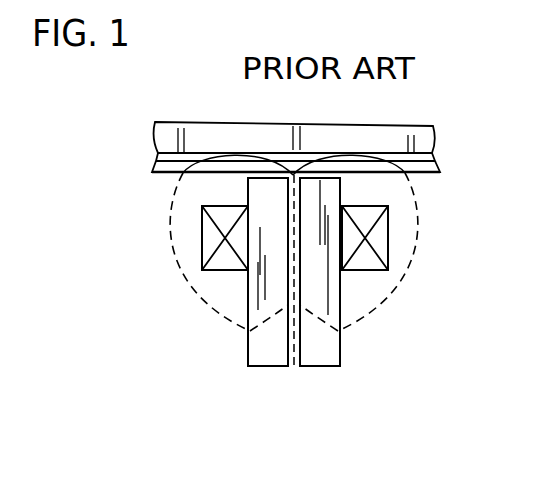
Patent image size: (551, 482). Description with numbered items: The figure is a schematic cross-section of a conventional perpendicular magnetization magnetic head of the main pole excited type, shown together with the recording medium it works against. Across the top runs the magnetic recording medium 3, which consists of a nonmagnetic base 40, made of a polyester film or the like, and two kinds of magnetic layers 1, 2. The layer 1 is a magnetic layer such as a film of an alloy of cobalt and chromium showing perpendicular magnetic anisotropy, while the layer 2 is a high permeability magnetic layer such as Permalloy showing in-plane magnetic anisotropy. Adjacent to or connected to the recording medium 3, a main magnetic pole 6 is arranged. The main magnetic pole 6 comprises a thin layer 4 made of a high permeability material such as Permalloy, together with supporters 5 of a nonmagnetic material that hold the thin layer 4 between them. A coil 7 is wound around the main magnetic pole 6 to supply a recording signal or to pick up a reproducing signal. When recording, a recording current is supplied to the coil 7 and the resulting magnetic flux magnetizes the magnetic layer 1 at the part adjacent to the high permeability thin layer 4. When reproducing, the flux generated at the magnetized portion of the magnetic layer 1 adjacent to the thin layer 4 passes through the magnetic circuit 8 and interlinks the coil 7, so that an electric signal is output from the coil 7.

The magnetic layer 1 is at (313, 170).
The magnetic layer 2 is at (437, 156).
The magnetic recording medium 3 is at (332, 148).
The thin layer 4 is at (297, 284).
The supporters 5 is at (268, 360).
The main magnetic pole 6 is at (343, 413).
The coil 7 is at (222, 265).
The magnetic circuit 8 is at (182, 283).
The nonmagnetic base 40 is at (432, 138).